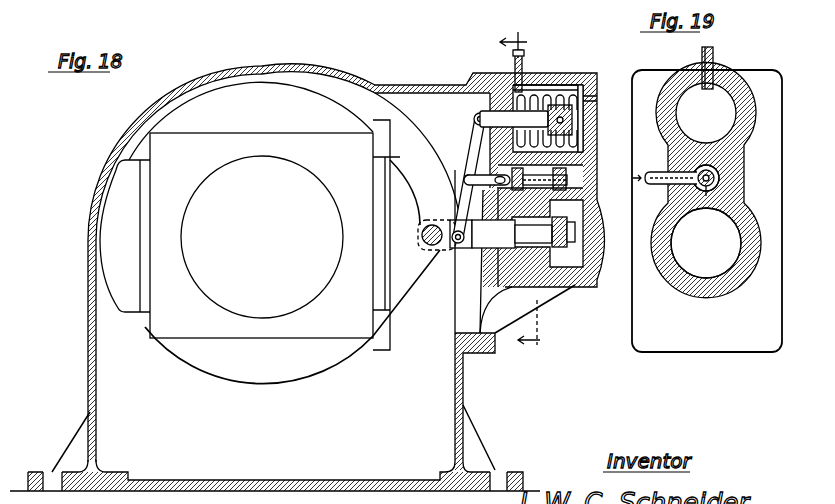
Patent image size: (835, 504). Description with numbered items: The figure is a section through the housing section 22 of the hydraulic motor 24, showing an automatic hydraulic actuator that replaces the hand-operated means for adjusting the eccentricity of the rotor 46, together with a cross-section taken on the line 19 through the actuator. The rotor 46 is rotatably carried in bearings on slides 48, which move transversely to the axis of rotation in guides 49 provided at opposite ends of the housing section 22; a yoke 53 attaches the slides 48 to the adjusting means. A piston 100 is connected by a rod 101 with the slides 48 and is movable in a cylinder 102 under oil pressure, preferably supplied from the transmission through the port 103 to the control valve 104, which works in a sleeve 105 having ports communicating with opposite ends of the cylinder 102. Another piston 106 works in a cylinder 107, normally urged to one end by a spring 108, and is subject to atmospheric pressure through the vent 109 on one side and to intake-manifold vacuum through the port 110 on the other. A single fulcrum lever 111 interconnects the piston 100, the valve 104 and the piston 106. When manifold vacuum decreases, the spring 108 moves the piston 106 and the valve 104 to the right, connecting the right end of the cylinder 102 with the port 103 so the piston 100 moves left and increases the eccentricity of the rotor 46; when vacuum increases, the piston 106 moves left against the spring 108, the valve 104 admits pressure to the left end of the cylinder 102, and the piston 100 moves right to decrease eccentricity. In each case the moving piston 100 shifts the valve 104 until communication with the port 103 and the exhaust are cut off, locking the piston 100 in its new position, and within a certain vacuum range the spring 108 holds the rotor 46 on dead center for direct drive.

In FIG. 18, the section line 19— 19 is at (517, 191).
In FIG. 18, the housing section 22 is at (465, 383).
In FIG. 18, the motor 24 is at (308, 383).
In FIG. 18, the rotor 46 is at (318, 107).
In FIG. 18, the slides 48 is at (367, 322).
In FIG. 18, the guides 49 is at (388, 345).
In FIG. 18, the yoke 53 is at (403, 290).
In FIG. 18, the piston 100 is at (600, 215).
In FIG. 18, the rod 101 is at (523, 232).
In FIG. 18, the cylinder 102 is at (568, 265).
In FIG. 19, the cylinder 102 is at (693, 262).
In FIG. 19, the port 103 is at (665, 171).
In FIG. 18, the control valve 104 is at (593, 181).
In FIG. 19, the control valve 104 is at (706, 196).
In FIG. 18, the sleeve 105 is at (596, 156).
In FIG. 19, the sleeve 105 is at (718, 178).
In FIG. 18, the piston 106 is at (565, 86).
In FIG. 18, the cylinder 107 is at (530, 83).
In FIG. 19, the cylinder 107 is at (726, 102).
In FIG. 18, the spring 108 is at (468, 152).
In FIG. 18, the vent 109 is at (600, 98).
In FIG. 18, the port 110 is at (522, 57).
In FIG. 19, the port 110 is at (709, 68).
In FIG. 18, the fulcrum lever 111 is at (458, 166).